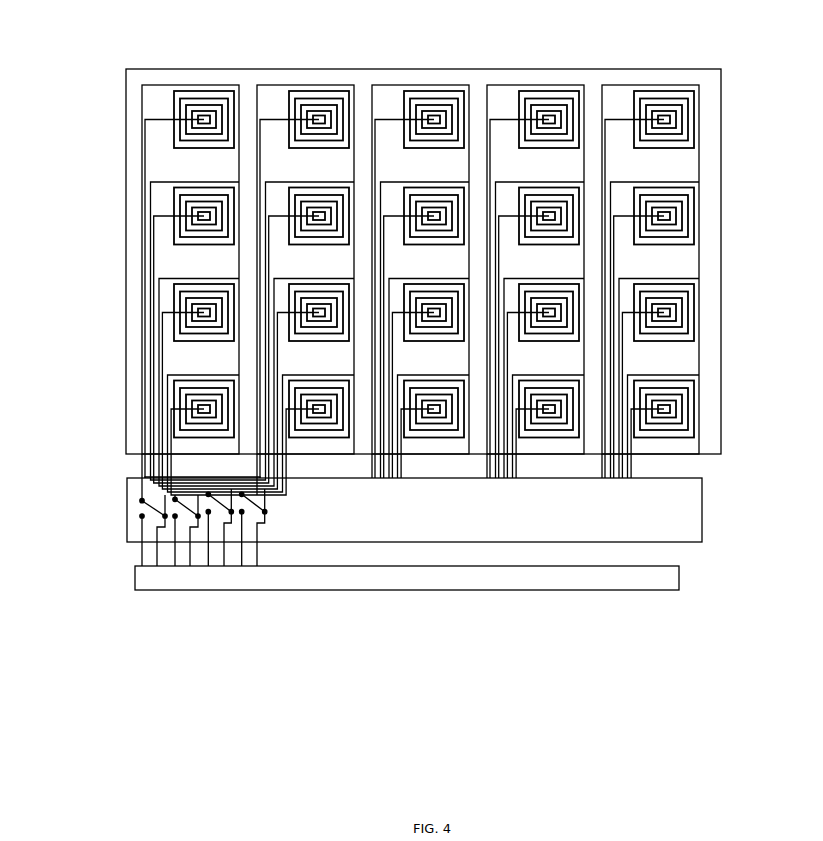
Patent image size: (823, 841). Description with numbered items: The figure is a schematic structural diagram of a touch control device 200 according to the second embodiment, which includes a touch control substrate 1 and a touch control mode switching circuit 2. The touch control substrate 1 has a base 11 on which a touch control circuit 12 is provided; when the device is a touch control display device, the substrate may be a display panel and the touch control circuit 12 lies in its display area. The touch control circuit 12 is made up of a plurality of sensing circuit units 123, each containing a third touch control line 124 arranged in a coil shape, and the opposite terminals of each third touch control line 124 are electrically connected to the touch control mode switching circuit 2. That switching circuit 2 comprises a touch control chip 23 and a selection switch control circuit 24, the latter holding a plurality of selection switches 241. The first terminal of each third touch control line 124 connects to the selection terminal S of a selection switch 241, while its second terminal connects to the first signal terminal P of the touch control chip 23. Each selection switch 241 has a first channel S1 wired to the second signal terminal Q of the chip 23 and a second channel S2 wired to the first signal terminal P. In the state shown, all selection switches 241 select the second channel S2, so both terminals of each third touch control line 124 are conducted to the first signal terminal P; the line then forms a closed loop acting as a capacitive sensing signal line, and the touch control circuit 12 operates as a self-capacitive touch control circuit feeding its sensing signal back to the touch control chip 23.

The touch control device 200 is at (125, 47).
The touch control substrate 1 is at (812, 65).
The base 11 is at (708, 85).
The touch control circuit 12 is at (784, 100).
The third touch control line 124 is at (695, 117).
The sensing circuit unit 123 is at (706, 137).
The touch control mode switching circuit 2 is at (752, 500).
The selection switch control circuit 24 is at (417, 546).
The touch control chip 23 is at (437, 577).
The selection switch 241 is at (231, 520).
The selection terminal S is at (140, 500).
The first channel S1 is at (140, 517).
The second channel S2 is at (165, 518).
The second signal terminal Q is at (141, 576).
The first signal terminal P is at (157, 576).